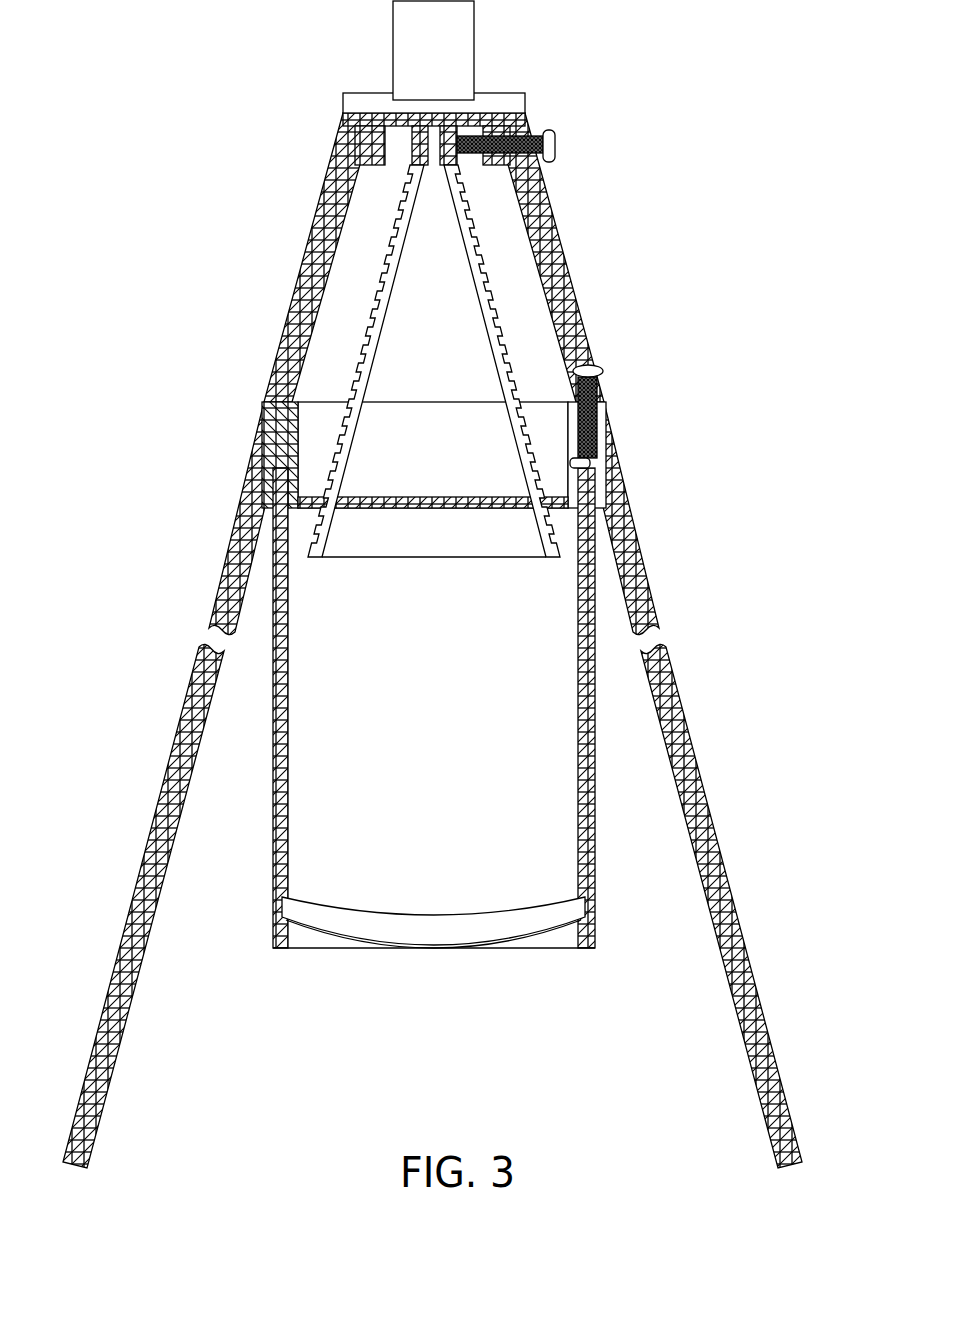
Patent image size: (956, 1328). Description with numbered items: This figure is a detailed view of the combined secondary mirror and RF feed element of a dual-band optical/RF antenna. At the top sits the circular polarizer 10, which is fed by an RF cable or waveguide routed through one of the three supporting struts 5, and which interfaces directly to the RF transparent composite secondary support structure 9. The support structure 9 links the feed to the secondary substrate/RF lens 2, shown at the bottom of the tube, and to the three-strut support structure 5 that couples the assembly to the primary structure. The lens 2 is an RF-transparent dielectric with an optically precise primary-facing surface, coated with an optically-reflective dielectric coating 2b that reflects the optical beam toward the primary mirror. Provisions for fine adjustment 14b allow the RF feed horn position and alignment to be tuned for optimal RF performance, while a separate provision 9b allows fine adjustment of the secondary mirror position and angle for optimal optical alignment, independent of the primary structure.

The circular polarizer 10 is at (474, 40).
The fine adjustment of the RF feed horn 14b is at (556, 142).
The fine adjustment of the secondary mirror position and angle 9b is at (603, 371).
The supporting struts 5 is at (223, 565).
The secondary support structure 9 is at (595, 713).
The secondary substrate/RF lens 2 is at (595, 903).
The optically-reflective dielectric coating 2b is at (552, 935).